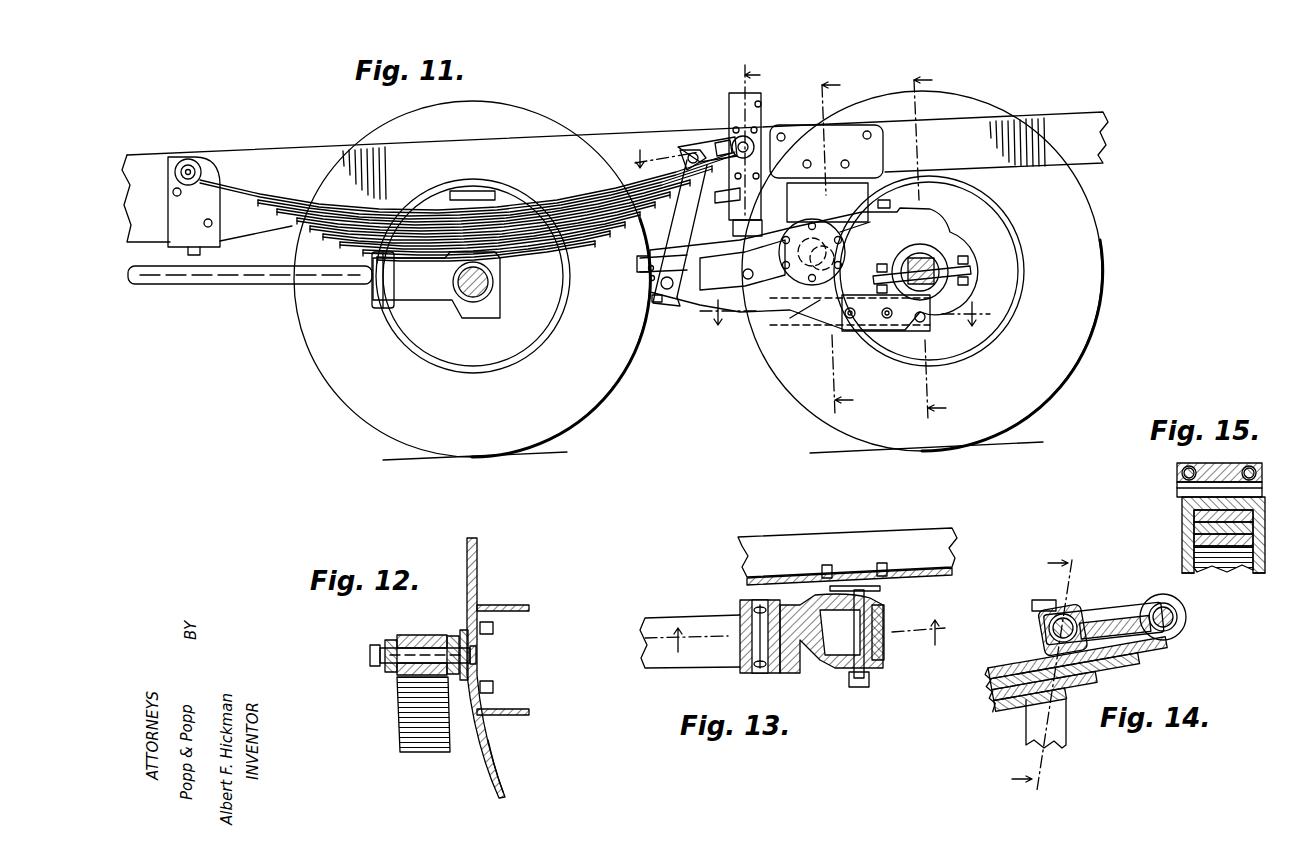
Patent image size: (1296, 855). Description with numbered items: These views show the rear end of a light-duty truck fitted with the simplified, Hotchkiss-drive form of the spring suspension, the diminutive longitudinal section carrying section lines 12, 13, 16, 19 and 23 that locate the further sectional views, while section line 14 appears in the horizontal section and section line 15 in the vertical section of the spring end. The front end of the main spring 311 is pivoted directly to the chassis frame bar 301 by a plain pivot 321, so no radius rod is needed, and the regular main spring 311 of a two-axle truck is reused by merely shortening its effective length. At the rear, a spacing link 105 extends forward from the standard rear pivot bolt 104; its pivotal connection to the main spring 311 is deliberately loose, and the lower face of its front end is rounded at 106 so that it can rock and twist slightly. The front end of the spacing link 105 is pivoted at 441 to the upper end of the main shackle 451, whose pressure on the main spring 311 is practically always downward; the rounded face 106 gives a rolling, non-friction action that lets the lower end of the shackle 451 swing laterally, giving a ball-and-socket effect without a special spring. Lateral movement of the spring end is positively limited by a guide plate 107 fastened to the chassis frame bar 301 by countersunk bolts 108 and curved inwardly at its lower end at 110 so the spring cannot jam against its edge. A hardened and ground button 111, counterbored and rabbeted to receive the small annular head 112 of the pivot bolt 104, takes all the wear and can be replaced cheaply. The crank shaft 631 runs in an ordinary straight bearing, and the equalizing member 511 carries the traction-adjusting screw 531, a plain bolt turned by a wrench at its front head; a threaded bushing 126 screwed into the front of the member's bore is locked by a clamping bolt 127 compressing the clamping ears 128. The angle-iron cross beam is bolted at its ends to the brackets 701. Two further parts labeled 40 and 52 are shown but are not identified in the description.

In FIG. 11, the section line 12— 12 is at (718, 235).
In FIG. 11, the section line 13— 13 is at (772, 95).
In FIG. 13, the section line 14— 14 is at (806, 637).
In FIG. 14, the section line 15— 15 is at (1048, 665).
In FIG. 11, the section line 16— 16 is at (836, 245).
In FIG. 11, the section line 19— 19 is at (925, 251).
In FIG. 11, the section line 23— 23 is at (849, 307).
In FIG. 11, the front wheel 40 is at (375, 429).
In FIG. 11, the rear wheel 52 is at (1040, 405).
In FIG. 11, the pivot bolt 104 is at (740, 137).
In FIG. 12, the pivot bolt 104 is at (370, 656).
In FIG. 13, the pivot bolt 104 is at (860, 690).
In FIG. 14, the pivot bolt 104 is at (1187, 619).
In FIG. 11, the spacing link 105 is at (722, 140).
In FIG. 12, the spacing link 105 is at (452, 636).
In FIG. 13, the spacing link 105 is at (822, 670).
In FIG. 14, the spacing link 105 is at (1102, 618).
In FIG. 15, the spacing link 105 is at (1235, 460).
In FIG. 14, the rounded lower face 106 is at (1042, 656).
In FIG. 15, the rounded lower face 106 is at (1185, 516).
In FIG. 11, the guide plate 107 is at (729, 98).
In FIG. 12, the guide plate 107 is at (467, 560).
In FIG. 13, the guide plate 107 is at (885, 582).
In FIG. 11, the countersunk bolts 108 is at (758, 100).
In FIG. 12, the countersunk bolts 108 is at (494, 628).
In FIG. 13, the countersunk bolts 108 is at (880, 563).
In FIG. 11, the inwardly curved lower end 110 is at (740, 222).
In FIG. 12, the inwardly curved lower end 110 is at (492, 785).
In FIG. 12, the hardened and ground button 111 is at (462, 628).
In FIG. 13, the hardened and ground button 111 is at (878, 592).
In FIG. 11, the annular head 112 is at (718, 201).
In FIG. 12, the annular head 112 is at (476, 653).
In FIG. 11, the threaded bushing 126 is at (648, 269).
In FIG. 11, the clamping bolt 127 is at (655, 295).
In FIG. 11, the clamping ears 128 is at (650, 279).
In FIG. 11, the chassis frame bar 301 is at (291, 151).
In FIG. 12, the chassis frame bar 301 is at (510, 604).
In FIG. 13, the chassis frame bar 301 is at (770, 537).
In FIG. 11, the main spring 311 is at (268, 222).
In FIG. 12, the main spring 311 is at (420, 635).
In FIG. 13, the main spring 311 is at (665, 618).
In FIG. 14, the main spring 311 is at (1105, 670).
In FIG. 15, the main spring 311 is at (1230, 575).
In FIG. 11, the plain pivot 321 is at (188, 170).
In FIG. 11, the pivot 441 is at (690, 145).
In FIG. 13, the pivot 441 is at (760, 673).
In FIG. 15, the pivot 441 is at (1180, 490).
In FIG. 11, the main shackle 451 is at (665, 233).
In FIG. 13, the main shackle 451 is at (740, 603).
In FIG. 14, the main shackle 451 is at (1026, 728).
In FIG. 15, the main shackle 451 is at (1185, 562).
In FIG. 11, the equalizing member 511 is at (695, 292).
In FIG. 11, the traction-adjusting screw 531 is at (636, 260).
In FIG. 11, the crank shaft 631 is at (830, 252).
In FIG. 11, the brackets 701 is at (845, 125).